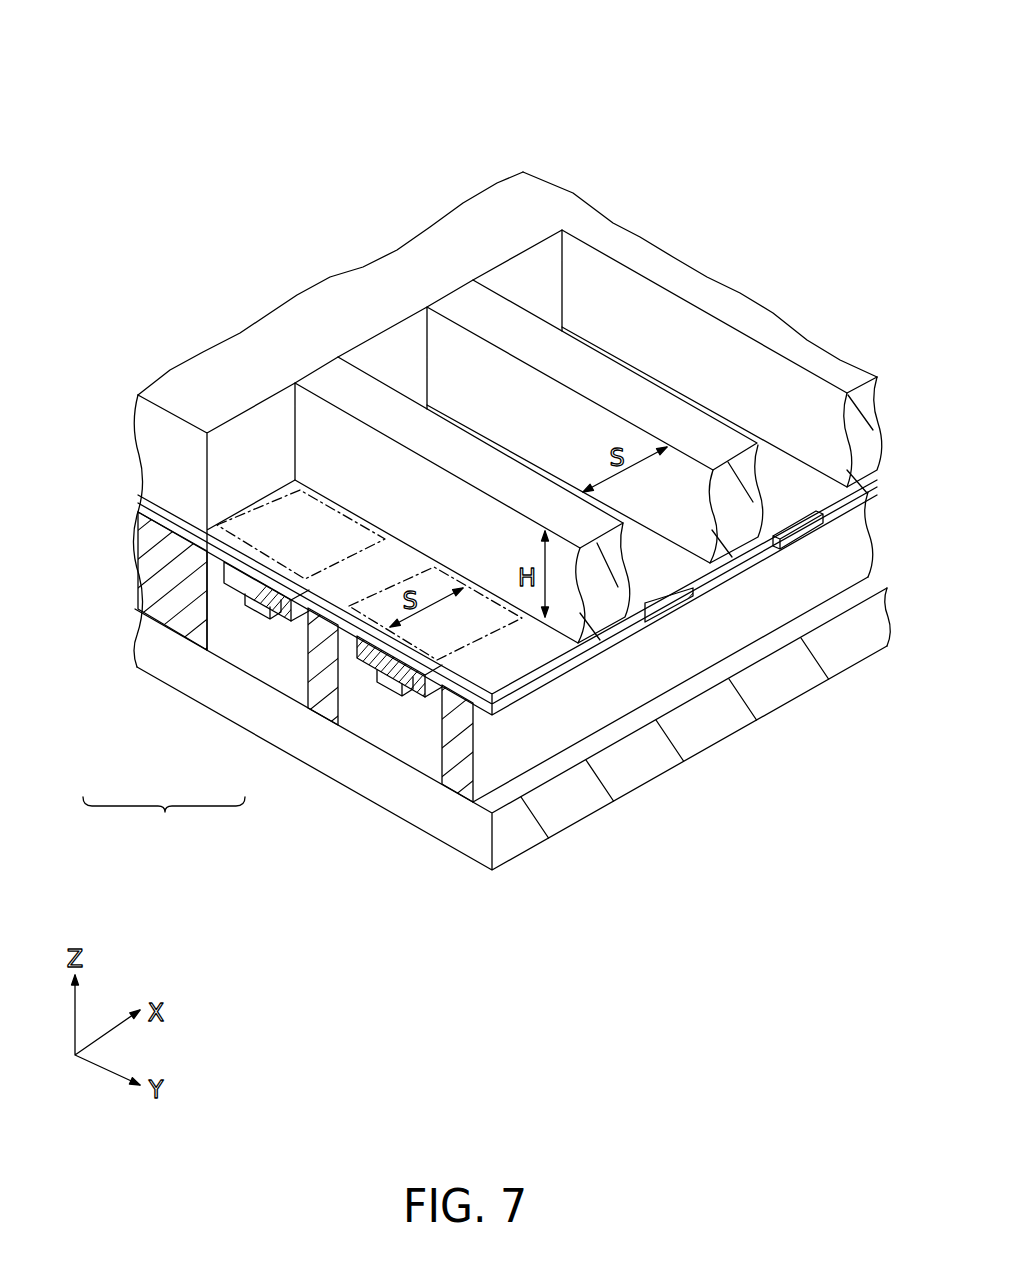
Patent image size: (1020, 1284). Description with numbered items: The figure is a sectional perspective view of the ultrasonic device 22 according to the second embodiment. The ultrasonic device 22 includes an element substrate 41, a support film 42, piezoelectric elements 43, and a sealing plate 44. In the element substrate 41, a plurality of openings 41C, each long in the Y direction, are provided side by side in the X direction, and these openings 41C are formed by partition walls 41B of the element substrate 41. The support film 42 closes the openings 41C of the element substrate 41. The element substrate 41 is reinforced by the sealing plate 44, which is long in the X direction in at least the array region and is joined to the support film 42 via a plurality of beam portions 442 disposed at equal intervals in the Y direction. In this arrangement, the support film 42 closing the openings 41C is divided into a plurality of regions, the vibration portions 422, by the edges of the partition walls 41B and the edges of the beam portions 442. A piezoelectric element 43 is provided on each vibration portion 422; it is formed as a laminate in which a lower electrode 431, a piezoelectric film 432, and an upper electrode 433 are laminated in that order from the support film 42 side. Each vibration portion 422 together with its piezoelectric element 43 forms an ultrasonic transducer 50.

The ultrasonic device 22 is at (489, 109).
The element substrate 41 is at (140, 461).
The partition wall 41B is at (460, 352).
The opening 41C is at (272, 447).
The support film 42 is at (530, 640).
The vibration portion 422 is at (323, 498).
The piezoelectric element 43 is at (164, 820).
The lower electrode 431 is at (186, 566).
The piezoelectric film 432 is at (228, 584).
The upper electrode 433 is at (251, 590).
The sealing plate 44 is at (148, 640).
The beam portion 442 is at (325, 652).
The ultrasonic transducer 50 is at (275, 640).